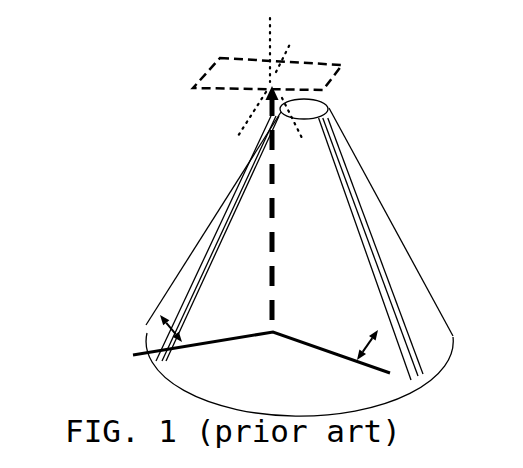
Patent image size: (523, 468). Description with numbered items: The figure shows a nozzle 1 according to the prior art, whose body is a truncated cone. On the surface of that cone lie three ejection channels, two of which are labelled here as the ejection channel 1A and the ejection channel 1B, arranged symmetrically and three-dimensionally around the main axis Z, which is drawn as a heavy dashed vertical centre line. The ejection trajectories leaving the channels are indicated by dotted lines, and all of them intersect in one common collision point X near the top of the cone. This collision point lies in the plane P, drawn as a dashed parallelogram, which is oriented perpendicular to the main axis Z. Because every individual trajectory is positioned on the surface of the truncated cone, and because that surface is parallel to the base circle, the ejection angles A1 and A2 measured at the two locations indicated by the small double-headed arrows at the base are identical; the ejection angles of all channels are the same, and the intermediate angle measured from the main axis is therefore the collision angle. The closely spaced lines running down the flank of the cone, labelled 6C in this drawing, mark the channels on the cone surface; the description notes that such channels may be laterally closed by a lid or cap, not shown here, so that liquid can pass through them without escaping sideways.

The nozzle 1 is at (392, 106).
The ejection channel 1A is at (222, 160).
The ejection channel 1B is at (278, 89).
The seam / overlapping edge 6C is at (330, 212).
The collision point X is at (275, 82).
The plane P is at (312, 66).
The main axis Z is at (272, 272).
The ejection angle A1 is at (168, 332).
The ejection angle A2 is at (372, 342).